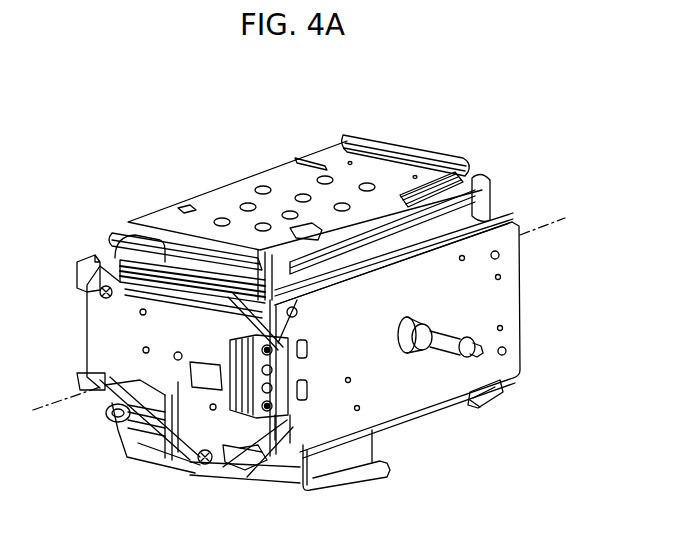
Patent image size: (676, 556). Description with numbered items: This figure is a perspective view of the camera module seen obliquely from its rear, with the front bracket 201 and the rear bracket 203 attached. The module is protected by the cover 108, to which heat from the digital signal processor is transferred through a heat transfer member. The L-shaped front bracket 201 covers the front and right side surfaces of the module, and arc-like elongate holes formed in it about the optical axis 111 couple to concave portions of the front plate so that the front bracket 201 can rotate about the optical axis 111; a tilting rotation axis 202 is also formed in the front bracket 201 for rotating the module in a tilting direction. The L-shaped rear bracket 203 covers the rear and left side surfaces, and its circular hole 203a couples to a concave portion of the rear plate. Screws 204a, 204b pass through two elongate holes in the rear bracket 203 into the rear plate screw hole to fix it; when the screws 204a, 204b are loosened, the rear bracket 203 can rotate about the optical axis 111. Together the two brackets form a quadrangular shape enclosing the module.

The cover 108 is at (267, 173).
The optical axis 111 is at (67, 395).
The front bracket 201 is at (470, 400).
The tilting rotation axis 202 is at (488, 357).
The rear bracket 203 is at (185, 477).
The circular hole 203a is at (178, 352).
The screw 204a is at (100, 258).
The screw 204b is at (225, 476).